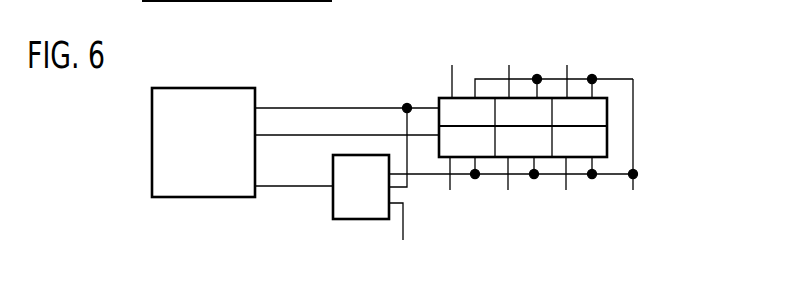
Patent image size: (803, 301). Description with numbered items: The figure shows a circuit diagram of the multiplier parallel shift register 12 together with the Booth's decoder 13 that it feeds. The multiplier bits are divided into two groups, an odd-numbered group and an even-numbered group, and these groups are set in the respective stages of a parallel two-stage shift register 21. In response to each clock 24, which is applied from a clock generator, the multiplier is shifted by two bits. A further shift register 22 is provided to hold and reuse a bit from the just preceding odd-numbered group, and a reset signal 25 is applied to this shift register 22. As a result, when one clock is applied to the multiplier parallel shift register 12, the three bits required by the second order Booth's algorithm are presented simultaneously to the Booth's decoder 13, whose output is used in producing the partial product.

The multiplier parallel shift register 12 is at (588, 111).
The Booth's decoder 13 is at (152, 149).
The parallel 2-stage shift register 21 is at (608, 117).
The shift register 22 is at (360, 222).
The clock 24 is at (636, 188).
The reset signal 25 is at (400, 235).